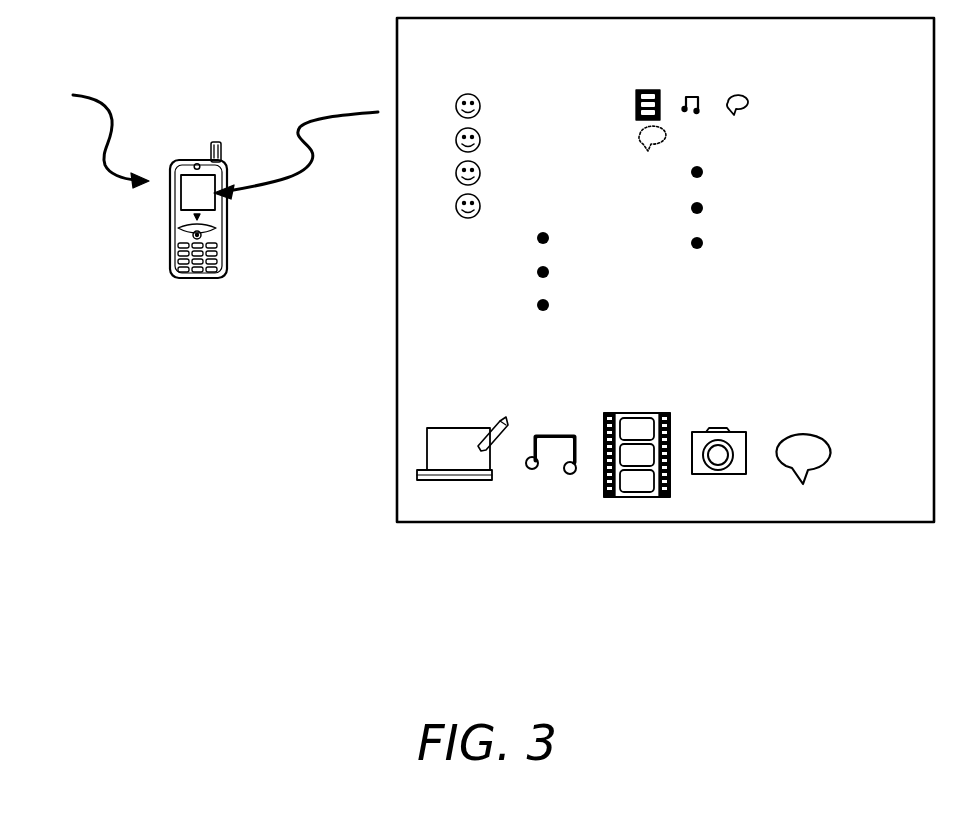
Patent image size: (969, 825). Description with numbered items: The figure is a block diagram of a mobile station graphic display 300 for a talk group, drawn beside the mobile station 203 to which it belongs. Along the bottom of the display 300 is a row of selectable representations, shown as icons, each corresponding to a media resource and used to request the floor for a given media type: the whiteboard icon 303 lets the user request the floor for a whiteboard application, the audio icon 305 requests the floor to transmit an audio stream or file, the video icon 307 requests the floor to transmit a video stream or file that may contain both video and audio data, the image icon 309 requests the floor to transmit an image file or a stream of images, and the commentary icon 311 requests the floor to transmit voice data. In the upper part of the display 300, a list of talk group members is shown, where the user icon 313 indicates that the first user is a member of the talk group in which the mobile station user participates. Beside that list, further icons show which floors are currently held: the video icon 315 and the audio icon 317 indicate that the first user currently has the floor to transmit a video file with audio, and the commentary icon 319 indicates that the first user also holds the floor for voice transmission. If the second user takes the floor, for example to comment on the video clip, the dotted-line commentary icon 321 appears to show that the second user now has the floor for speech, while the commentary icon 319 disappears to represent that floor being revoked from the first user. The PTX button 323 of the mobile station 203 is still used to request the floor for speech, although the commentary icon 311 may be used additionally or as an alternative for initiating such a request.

The mobile station graphic display 300 is at (903, 59).
The mobile station 203 is at (176, 217).
The PTX button 323 is at (88, 136).
The user icon 313 is at (494, 84).
The video icon 315 is at (647, 88).
The audio icon 317 is at (692, 95).
The commentary icon 319 is at (737, 94).
The commentary icon 321 is at (664, 135).
The whiteboard icon 303 is at (459, 426).
The audio icon 305 is at (560, 434).
The video icon 307 is at (637, 412).
The image icon 309 is at (718, 428).
The commentary icon 311 is at (800, 433).